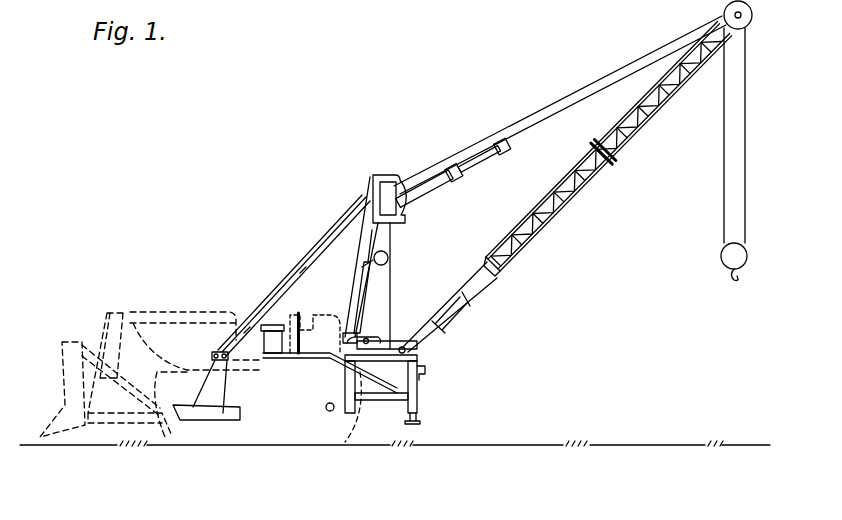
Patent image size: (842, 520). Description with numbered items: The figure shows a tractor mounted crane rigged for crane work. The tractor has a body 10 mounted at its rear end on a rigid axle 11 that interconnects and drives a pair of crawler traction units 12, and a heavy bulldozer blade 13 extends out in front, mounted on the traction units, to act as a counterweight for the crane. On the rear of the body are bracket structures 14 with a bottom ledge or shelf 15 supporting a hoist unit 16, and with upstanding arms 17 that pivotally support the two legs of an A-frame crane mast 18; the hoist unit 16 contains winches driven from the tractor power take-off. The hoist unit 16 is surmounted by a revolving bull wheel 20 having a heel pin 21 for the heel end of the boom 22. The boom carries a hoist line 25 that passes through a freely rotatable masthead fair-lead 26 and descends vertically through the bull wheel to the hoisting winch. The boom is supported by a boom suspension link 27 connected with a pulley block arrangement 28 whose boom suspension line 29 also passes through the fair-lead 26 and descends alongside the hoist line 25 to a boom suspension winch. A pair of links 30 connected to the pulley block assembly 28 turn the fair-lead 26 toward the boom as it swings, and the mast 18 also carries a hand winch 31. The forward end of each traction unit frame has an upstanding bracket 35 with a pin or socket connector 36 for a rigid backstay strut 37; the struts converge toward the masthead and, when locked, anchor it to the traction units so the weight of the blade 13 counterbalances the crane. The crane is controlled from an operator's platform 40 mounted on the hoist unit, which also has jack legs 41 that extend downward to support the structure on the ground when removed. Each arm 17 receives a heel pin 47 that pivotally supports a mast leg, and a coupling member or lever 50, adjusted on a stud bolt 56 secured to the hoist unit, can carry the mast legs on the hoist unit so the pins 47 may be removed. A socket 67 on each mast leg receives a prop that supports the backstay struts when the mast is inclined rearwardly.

The tractor body 10 is at (193, 313).
The rigid axle 11 is at (330, 412).
The crawler traction units 12 is at (247, 437).
The bulldozer blade 13 is at (60, 346).
The bracket structures 14 is at (338, 392).
The bottom ledge or shelf 15 is at (362, 420).
The hoist unit 16 is at (426, 374).
The upstanding arms 17 is at (367, 257).
The A-frame crane mast 18 is at (348, 289).
The revolving bull wheel 20 is at (422, 362).
The heel pin 21 is at (412, 350).
The boom 22 is at (537, 233).
The hoist line 25 is at (630, 65).
The masthead fair-lead 26 is at (400, 185).
The boom suspension link 27 is at (555, 112).
The pulley block arrangement 28 is at (490, 143).
The boom suspension line 29 is at (440, 168).
The links 30 is at (430, 193).
The hand winch 31 is at (386, 232).
The upstanding bracket 35 is at (217, 387).
The pin or socket connector 36 is at (212, 355).
The backstay strut 37 is at (282, 284).
The operator's platform 40 is at (283, 358).
The jack legs 41 is at (420, 420).
The heel pin 47 is at (353, 298).
The coupling member or lever 50 is at (392, 316).
The stud bolt 56 is at (370, 350).
The socket 67 is at (340, 290).